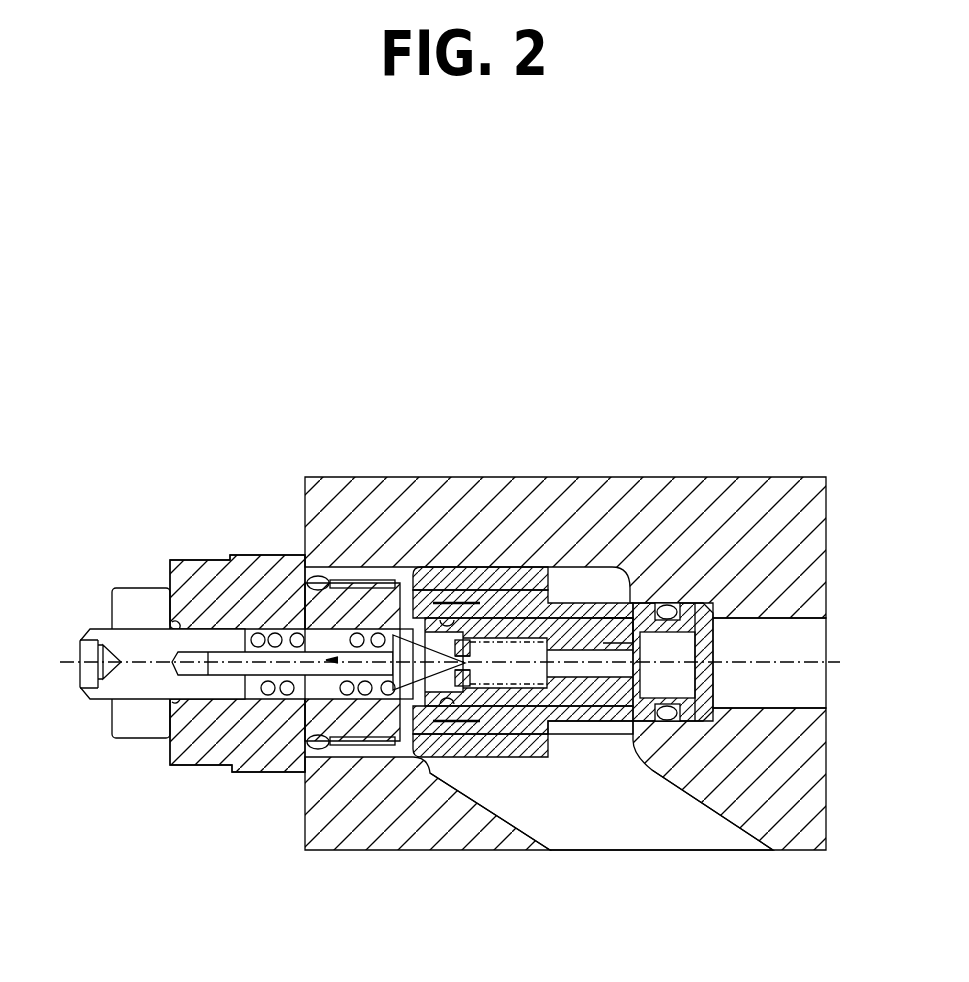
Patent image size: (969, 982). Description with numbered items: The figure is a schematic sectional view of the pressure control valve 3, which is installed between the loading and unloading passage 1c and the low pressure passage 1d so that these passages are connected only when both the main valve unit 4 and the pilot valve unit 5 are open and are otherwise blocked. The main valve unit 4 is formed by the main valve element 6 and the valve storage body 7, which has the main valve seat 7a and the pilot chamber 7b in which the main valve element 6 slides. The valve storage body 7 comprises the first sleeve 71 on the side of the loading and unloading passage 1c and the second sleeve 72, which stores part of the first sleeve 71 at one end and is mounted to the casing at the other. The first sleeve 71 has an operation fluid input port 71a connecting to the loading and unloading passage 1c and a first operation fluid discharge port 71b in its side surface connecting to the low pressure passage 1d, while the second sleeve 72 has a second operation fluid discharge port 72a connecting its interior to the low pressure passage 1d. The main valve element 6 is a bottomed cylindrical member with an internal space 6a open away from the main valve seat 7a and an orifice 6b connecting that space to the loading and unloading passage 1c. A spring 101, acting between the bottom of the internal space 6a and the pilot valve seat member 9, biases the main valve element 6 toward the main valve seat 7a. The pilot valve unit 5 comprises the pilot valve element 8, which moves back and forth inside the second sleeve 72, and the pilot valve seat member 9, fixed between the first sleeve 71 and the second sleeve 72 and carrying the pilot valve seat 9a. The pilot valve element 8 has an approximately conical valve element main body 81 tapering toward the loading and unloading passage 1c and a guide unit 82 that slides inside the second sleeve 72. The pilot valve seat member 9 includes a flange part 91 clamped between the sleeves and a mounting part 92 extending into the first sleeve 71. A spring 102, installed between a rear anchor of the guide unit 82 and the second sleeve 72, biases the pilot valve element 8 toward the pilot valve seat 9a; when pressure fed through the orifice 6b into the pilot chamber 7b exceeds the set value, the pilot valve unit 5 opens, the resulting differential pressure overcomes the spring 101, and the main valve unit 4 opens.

The loading and unloading passage 1c is at (777, 643).
The low pressure passage 1d is at (674, 807).
The pressure control valve 3 is at (298, 775).
The main valve unit 4 is at (592, 729).
The pilot valve unit 5 is at (399, 604).
The main valve element 6 is at (592, 624).
The internal space 6a is at (520, 632).
The orifice 6b is at (614, 617).
The valve storage body 7 is at (430, 752).
The main valve seat 7a is at (633, 602).
The pilot chamber 7b is at (500, 748).
The pilot valve element 8 is at (320, 684).
The pilot valve seat member 9 is at (476, 638).
The pilot valve seat 9a is at (383, 697).
The first sleeve 71 is at (535, 750).
The operation fluid input port 71a is at (674, 606).
The first operation fluid discharge port 71b is at (640, 724).
The second sleeve 72 is at (200, 750).
The second operation fluid discharge port 72a is at (395, 745).
The valve element main body 81 is at (460, 604).
The guide unit 82 is at (256, 600).
The flange part 91 is at (433, 618).
The mounting part 92 is at (455, 745).
The spring 101 is at (570, 740).
The spring 102 is at (289, 623).